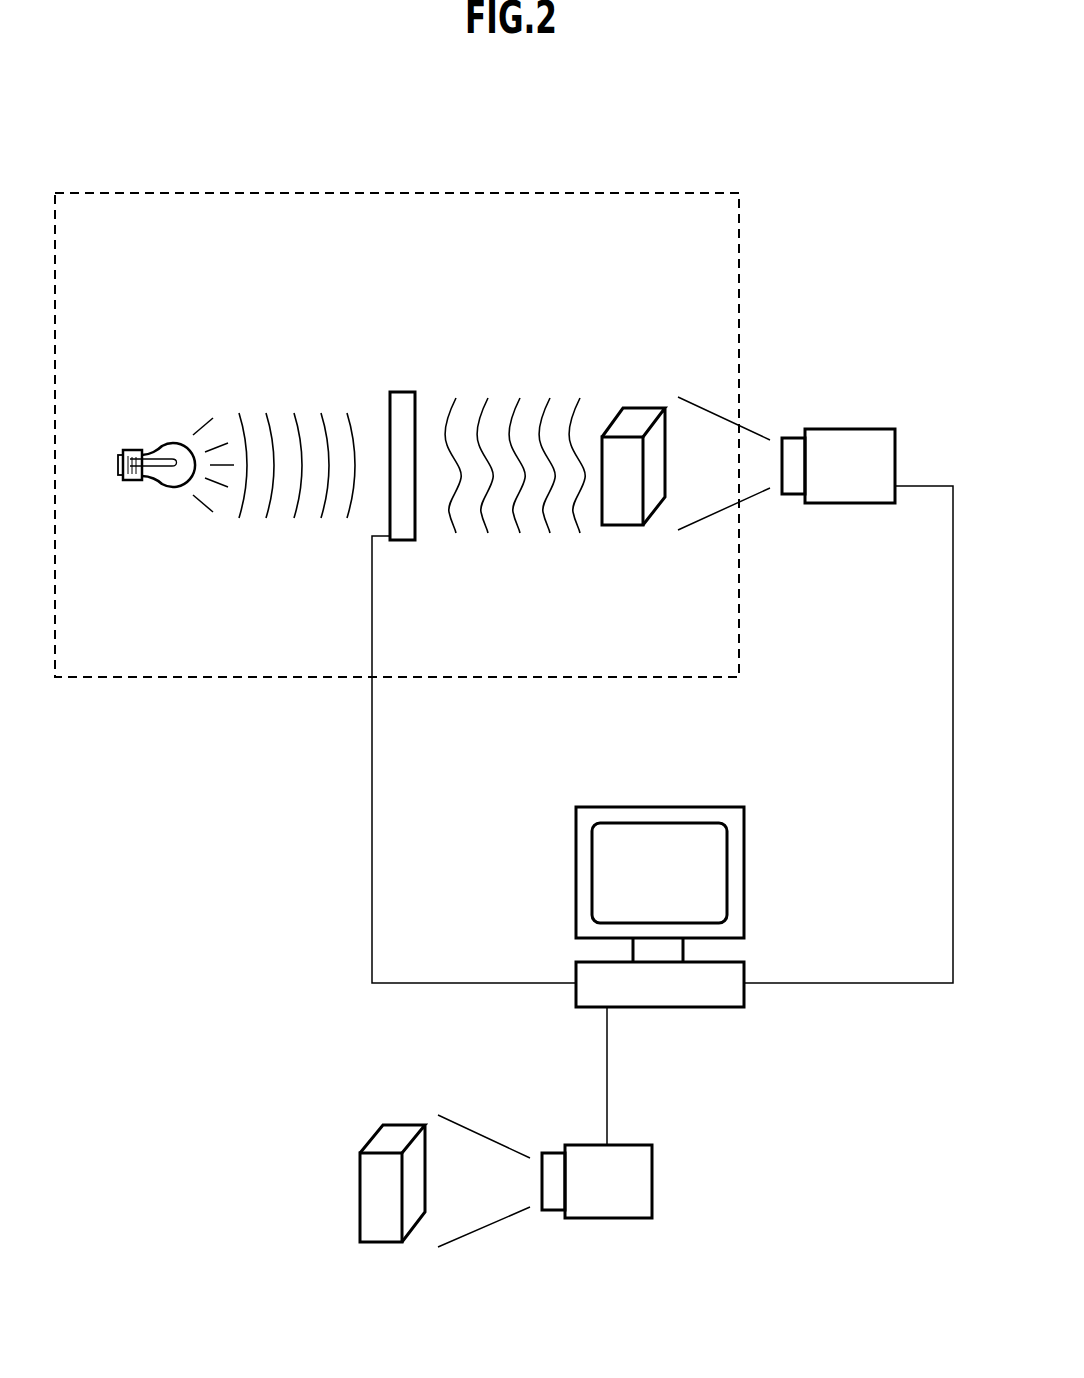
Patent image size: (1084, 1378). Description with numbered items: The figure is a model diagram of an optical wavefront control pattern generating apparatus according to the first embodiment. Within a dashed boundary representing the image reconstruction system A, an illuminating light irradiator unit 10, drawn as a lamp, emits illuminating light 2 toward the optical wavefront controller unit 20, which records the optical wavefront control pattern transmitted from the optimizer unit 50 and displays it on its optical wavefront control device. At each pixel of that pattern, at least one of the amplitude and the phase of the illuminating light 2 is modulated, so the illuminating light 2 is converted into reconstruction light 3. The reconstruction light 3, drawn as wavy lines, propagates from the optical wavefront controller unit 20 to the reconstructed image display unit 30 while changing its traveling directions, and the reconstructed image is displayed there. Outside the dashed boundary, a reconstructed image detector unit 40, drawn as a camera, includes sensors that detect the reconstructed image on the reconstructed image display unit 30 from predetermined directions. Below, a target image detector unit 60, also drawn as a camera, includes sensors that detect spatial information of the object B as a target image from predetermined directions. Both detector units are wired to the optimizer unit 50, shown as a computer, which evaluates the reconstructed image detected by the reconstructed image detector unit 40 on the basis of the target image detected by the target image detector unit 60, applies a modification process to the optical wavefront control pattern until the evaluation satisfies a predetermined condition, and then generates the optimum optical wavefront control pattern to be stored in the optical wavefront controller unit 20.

The image reconstruction system A is at (583, 192).
The illuminating light irradiator unit 10 is at (163, 440).
The illuminating light 2 is at (250, 532).
The optical wavefront controller unit 20 is at (410, 392).
The reconstruction light 3 is at (485, 537).
The reconstructed image display unit 30 is at (650, 408).
The reconstructed image detector unit 40 is at (823, 429).
The optimizer unit 50 is at (690, 1010).
The target image detector unit 60 is at (603, 1220).
The object B is at (375, 1242).